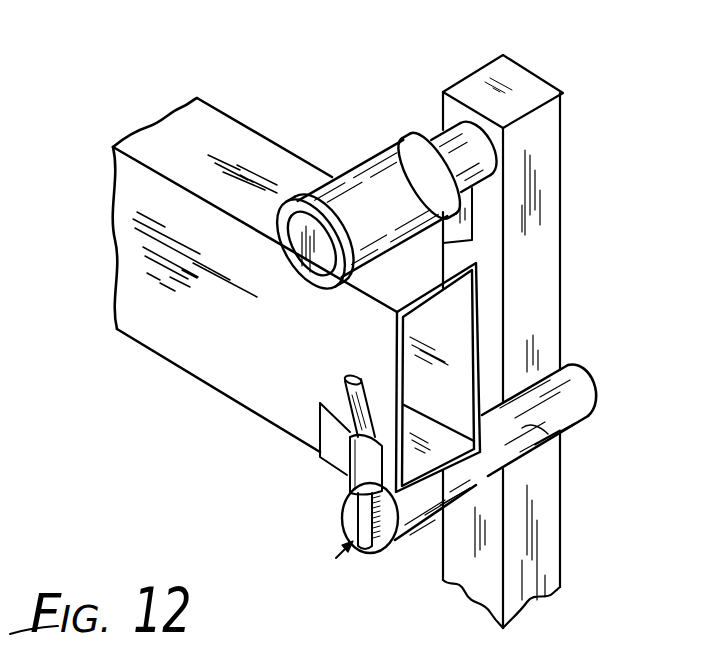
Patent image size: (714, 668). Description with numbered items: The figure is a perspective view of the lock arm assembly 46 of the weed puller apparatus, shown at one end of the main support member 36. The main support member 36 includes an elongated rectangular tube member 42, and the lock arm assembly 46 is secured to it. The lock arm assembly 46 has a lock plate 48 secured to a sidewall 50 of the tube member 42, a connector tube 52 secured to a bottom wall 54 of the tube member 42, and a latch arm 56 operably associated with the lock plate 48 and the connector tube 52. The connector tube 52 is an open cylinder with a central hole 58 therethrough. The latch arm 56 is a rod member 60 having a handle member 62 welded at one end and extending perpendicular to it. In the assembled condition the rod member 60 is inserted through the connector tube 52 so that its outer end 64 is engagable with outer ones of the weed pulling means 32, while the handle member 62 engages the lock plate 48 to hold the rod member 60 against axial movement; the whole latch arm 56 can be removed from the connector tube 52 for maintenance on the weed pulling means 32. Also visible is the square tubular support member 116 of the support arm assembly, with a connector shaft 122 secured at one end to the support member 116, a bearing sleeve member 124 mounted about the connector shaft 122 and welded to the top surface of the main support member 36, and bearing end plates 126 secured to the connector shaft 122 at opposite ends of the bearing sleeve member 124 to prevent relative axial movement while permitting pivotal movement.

The weed pulling means 32 is at (560, 528).
The main support member 36 is at (237, 148).
The tube member 42 is at (480, 263).
The lock arm assembly 46 is at (339, 560).
The lock plate 48 is at (343, 472).
The sidewall 50 is at (237, 322).
The connector tube 52 is at (456, 500).
The bottom wall 54 is at (258, 416).
The latch arm 56 is at (386, 530).
The central hole 58 is at (389, 520).
The rod member 60 is at (592, 398).
The handle member 62 is at (343, 383).
The outer end 64 is at (548, 447).
The support member 116 is at (541, 278).
The connector shaft 122 is at (467, 143).
The bearing sleeve member 124 is at (377, 177).
The bearing end plates 126 is at (300, 186).